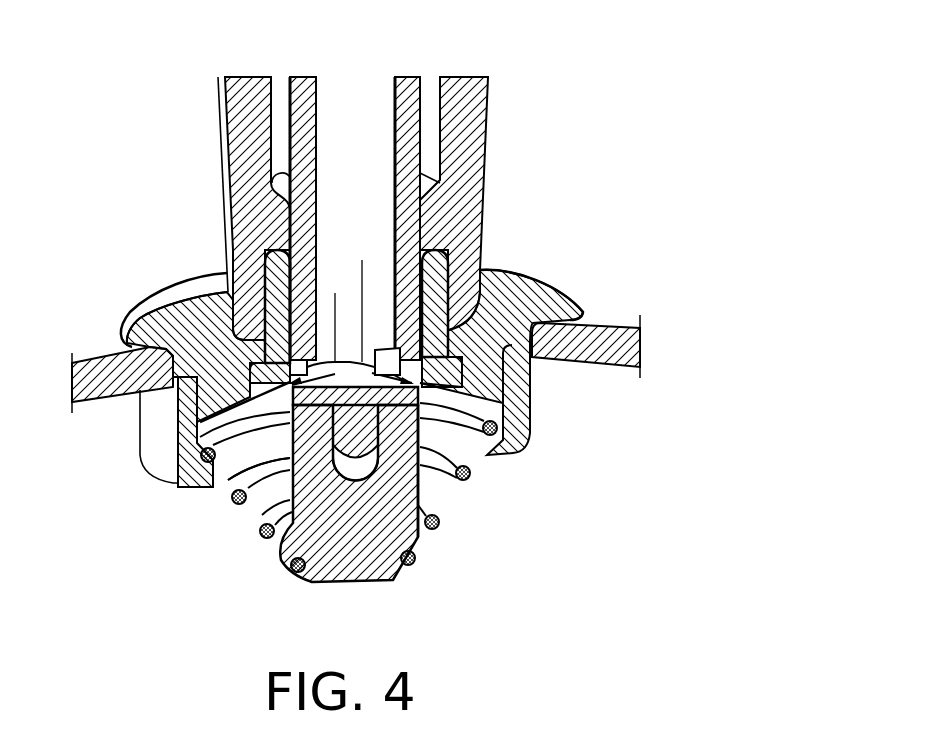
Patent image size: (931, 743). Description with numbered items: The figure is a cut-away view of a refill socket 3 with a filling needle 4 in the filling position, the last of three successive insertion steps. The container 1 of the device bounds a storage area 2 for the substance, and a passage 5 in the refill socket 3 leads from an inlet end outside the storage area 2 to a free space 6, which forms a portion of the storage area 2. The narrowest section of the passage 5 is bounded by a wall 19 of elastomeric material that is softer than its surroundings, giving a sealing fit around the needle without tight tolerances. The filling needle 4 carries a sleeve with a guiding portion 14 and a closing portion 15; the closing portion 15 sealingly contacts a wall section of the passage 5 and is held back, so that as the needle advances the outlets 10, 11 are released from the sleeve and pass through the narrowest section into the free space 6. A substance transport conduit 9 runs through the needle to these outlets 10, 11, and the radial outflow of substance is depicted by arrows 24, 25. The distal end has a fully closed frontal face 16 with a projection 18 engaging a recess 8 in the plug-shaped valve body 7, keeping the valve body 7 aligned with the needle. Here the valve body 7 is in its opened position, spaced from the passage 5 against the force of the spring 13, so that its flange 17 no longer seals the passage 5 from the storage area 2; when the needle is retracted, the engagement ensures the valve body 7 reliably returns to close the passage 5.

The container 1 is at (87, 350).
The storage area 2 is at (250, 512).
The refill socket 3 is at (185, 287).
The filling needle 4 is at (291, 106).
The passage 5 is at (428, 266).
The free space 6 is at (237, 448).
The valve body 7 is at (320, 562).
The recess 8 is at (351, 476).
The substance transport conduit 9 is at (358, 103).
The outlet 10 is at (187, 298).
The outlet 11 is at (380, 350).
The spring 13 is at (461, 487).
The guiding portion 14 is at (475, 158).
The closing portion 15 is at (427, 210).
The frontal face 16 is at (398, 410).
The flange 17 is at (420, 548).
The projection 18 is at (370, 468).
The wall 19 is at (497, 275).
The arrow 24 is at (362, 260).
The arrow 25 is at (335, 293).